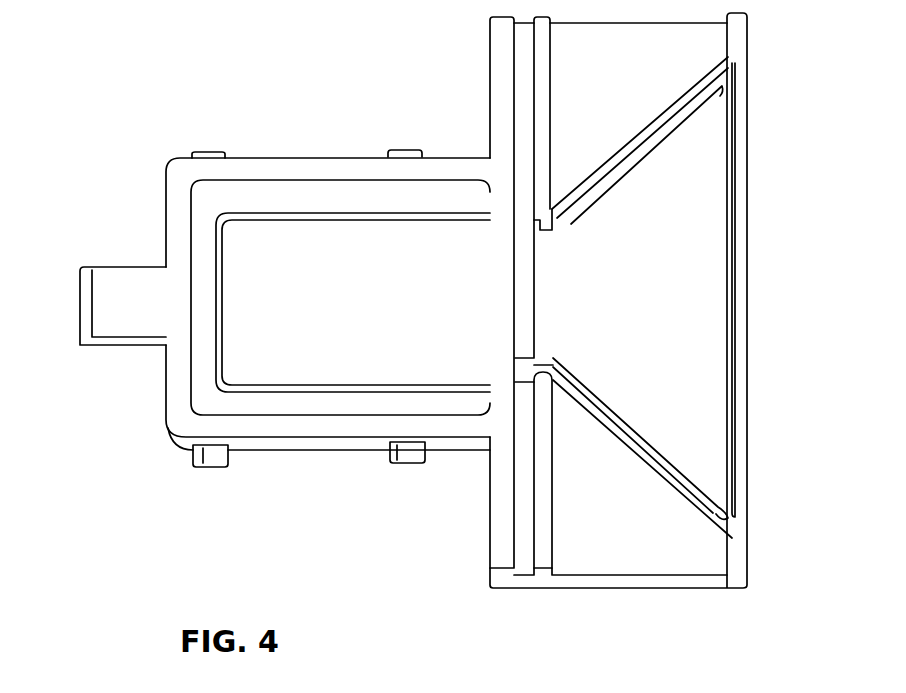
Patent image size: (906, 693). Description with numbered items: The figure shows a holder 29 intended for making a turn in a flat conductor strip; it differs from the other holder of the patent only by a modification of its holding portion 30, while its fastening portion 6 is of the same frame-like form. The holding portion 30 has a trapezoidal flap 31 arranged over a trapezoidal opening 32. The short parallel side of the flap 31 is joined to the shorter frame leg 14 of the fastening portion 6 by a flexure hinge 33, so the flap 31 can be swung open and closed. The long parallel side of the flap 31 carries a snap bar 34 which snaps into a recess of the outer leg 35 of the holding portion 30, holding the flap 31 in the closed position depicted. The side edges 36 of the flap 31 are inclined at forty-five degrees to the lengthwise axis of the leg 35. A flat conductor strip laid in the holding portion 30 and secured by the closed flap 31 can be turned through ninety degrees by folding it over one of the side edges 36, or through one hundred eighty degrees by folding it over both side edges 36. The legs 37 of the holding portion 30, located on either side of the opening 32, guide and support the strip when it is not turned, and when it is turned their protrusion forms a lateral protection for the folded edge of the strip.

The fastening portion 6 is at (275, 158).
The shorter frame leg 14 is at (500, 305).
The holder 29 is at (322, 451).
The holding portion 30 is at (488, 497).
The trapezoidal flap 31 is at (668, 238).
The trapezoidal opening 32 is at (678, 485).
The flexure hinge 33 is at (520, 265).
The snap bar 34 is at (737, 138).
The outer leg 35 is at (745, 284).
The side edges 36 is at (667, 127).
The legs 37 is at (668, 48).